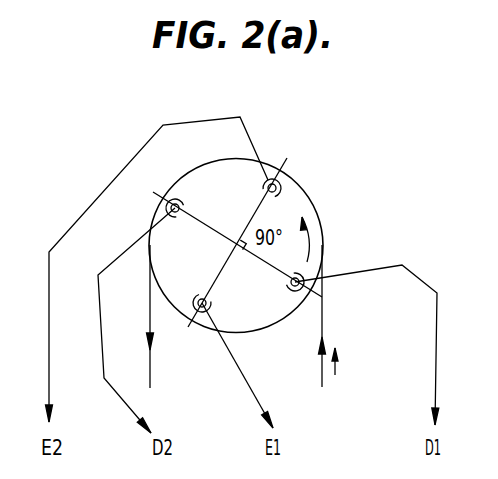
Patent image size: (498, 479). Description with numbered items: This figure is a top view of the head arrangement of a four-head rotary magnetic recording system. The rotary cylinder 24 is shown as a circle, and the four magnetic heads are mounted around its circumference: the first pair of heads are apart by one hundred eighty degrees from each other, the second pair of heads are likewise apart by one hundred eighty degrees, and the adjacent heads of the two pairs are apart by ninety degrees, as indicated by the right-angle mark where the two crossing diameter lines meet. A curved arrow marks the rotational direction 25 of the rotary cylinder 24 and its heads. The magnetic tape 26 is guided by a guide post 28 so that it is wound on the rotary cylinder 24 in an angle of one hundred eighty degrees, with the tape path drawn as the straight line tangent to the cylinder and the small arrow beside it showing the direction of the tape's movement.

The rotary cylinder 24 is at (291, 320).
The rotational direction 25 is at (309, 238).
The magnetic tape 26 is at (322, 309).
The guide post 28 is at (336, 368).